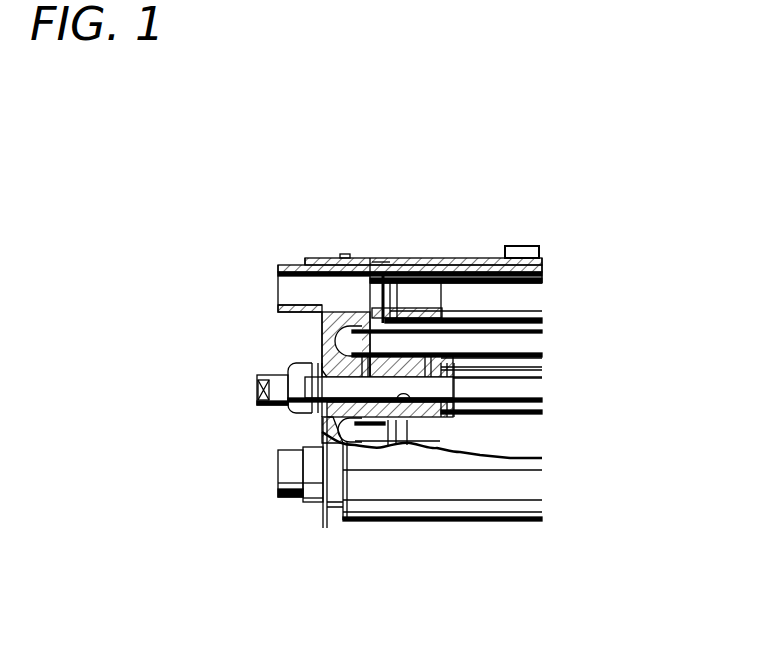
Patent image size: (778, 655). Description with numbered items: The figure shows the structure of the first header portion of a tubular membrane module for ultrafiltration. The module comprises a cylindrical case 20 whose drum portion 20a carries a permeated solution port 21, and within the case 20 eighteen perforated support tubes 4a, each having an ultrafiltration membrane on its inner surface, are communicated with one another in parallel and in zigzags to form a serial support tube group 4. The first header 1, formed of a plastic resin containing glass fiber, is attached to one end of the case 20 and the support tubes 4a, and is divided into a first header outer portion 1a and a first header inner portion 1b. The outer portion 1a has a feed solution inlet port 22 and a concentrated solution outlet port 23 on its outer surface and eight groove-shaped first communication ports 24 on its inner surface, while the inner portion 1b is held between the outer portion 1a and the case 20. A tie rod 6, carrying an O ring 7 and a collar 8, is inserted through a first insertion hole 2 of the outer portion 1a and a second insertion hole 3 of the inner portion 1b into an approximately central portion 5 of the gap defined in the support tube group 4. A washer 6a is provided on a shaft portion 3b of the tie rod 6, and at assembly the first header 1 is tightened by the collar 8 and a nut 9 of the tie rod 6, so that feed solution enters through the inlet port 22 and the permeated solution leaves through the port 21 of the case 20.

The first header 1 is at (360, 207).
The first header outer portion 1a is at (333, 265).
The first header inner portion 1b is at (410, 262).
The first insertion hole 2 is at (320, 417).
The second insertion hole 3 is at (413, 446).
The shaft portion 3b is at (283, 385).
The support tube group 4 is at (541, 293).
The perforated support tube 4a is at (541, 337).
The central portion 5 is at (447, 414).
The tie rod 6 is at (257, 375).
The washer 6a is at (325, 437).
The O ring 7 is at (448, 370).
The collar 8 is at (427, 362).
The nut 9 is at (302, 367).
The cylindrical case 20 is at (545, 262).
The drum portion 20a is at (377, 258).
The permeated solution port 21 is at (523, 246).
The feed solution inlet port 22 is at (290, 498).
The concentrated solution outlet port 23 is at (292, 288).
The first communication ports 24 is at (357, 330).